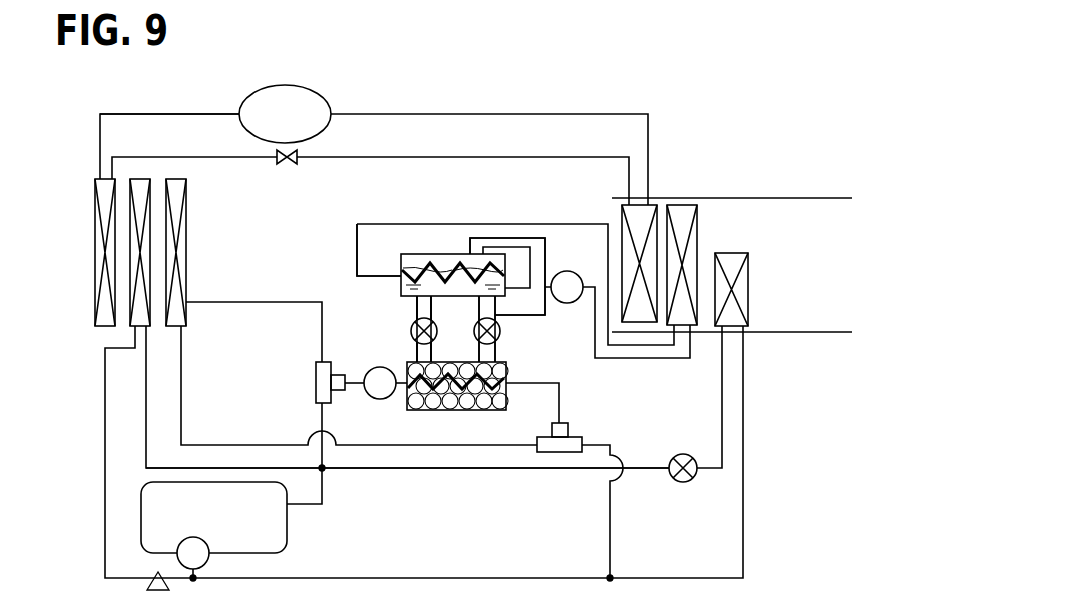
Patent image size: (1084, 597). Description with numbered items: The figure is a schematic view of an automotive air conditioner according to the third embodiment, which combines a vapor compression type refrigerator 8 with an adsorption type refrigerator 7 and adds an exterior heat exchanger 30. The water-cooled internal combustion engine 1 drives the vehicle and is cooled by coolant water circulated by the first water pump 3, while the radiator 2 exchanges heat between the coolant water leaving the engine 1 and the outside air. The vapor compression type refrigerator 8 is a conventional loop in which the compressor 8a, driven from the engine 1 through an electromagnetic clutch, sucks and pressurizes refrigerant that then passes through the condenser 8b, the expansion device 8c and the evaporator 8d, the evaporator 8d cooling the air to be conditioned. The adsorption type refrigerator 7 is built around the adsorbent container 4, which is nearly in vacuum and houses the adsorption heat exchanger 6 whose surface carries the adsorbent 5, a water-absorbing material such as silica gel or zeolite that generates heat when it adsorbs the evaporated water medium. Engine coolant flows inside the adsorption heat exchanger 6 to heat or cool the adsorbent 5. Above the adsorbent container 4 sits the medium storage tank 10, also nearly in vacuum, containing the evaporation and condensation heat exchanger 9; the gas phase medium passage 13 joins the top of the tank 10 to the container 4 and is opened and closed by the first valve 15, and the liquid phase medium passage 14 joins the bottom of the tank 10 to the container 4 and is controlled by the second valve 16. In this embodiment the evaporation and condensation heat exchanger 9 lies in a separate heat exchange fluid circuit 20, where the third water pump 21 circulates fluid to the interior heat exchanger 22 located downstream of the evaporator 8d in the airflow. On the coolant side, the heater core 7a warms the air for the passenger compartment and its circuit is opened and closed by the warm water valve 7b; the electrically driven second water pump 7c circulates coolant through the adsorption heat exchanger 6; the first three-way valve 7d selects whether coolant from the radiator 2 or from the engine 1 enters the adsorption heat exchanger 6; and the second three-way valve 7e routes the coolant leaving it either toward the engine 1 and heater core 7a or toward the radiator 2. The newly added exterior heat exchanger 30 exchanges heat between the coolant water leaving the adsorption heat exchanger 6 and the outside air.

The internal combustion engine 1 is at (287, 539).
The radiator 2 is at (130, 280).
The first water pump 3 is at (177, 560).
The adsorbent container 4 is at (506, 400).
The adsorbent 5 is at (484, 411).
The adsorption heat exchanger 6 is at (430, 411).
The adsorption type refrigerator 7 is at (606, 381).
The heater core 7a is at (748, 305).
The warm water valve 7b is at (683, 482).
The second water pump 7c is at (380, 400).
The first three-way valve 7d is at (316, 383).
The second three-way valve 7e is at (575, 437).
The vapor compression type refrigerator 8 is at (208, 104).
The compressor 8a is at (297, 86).
The condenser 8b is at (95, 221).
The expansion device 8c is at (287, 164).
The evaporator 8d is at (655, 213).
The evaporation and condensation heat exchanger 9 is at (453, 262).
The medium storage tank 10 is at (413, 250).
The gas phase medium passage 13 is at (543, 318).
The liquid phase medium passage 14 is at (417, 306).
The first valve 15 is at (497, 340).
The second valve 16 is at (411, 332).
The heat exchange fluid circuit 20 is at (357, 249).
The third water pump 21 is at (567, 271).
The interior heat exchanger 22 is at (697, 220).
The exterior heat exchanger 30 is at (186, 250).